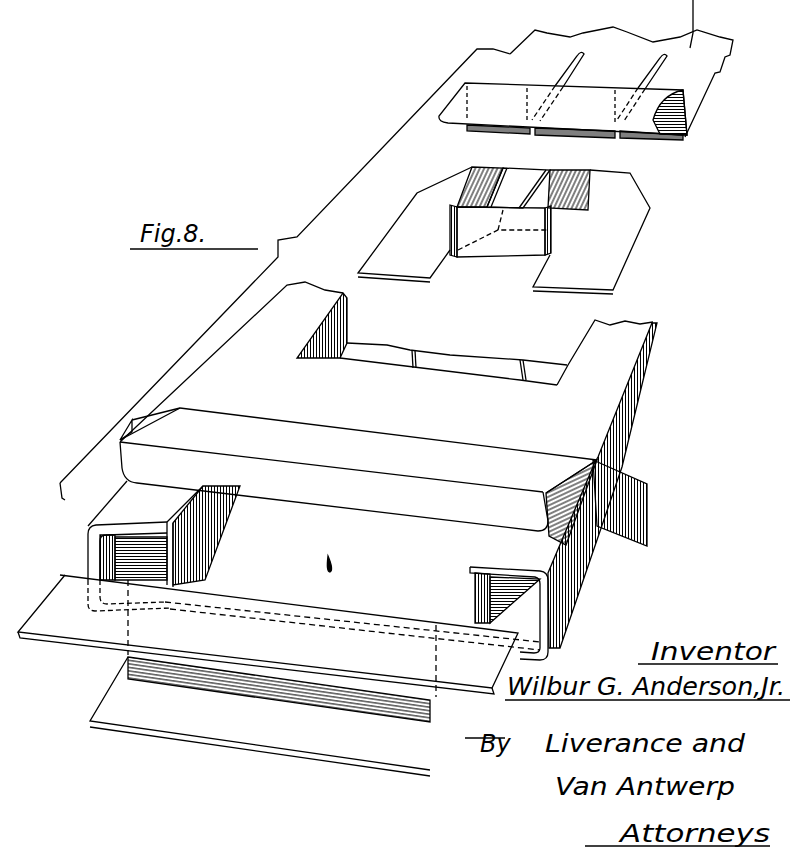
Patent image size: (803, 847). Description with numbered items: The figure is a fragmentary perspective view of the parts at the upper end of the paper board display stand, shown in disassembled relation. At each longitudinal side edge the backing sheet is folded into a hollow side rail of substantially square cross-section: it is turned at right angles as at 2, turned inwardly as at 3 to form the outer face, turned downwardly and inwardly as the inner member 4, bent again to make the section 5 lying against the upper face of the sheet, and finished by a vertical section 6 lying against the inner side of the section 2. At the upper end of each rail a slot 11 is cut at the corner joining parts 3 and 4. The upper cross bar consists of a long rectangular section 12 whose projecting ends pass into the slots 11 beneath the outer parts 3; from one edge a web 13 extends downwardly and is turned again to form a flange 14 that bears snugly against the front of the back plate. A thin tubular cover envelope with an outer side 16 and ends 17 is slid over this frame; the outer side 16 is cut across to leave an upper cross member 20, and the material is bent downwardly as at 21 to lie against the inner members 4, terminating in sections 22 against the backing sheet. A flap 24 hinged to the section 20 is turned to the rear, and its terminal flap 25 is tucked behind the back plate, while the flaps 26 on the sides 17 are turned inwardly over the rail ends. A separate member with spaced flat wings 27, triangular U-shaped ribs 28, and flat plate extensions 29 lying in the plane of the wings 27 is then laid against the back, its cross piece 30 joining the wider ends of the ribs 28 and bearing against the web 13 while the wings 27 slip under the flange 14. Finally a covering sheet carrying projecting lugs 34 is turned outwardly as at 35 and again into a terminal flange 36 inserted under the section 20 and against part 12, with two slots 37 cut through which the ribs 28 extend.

The right-angle turned section 2 is at (88, 565).
The outer face of side rail 3 is at (125, 503).
The inner member of side rail 4 is at (205, 522).
The section lying against upper face of sheet 5 is at (150, 568).
The vertical terminal section 6 is at (110, 540).
The slots 11 is at (190, 512).
The rectangular section of cross bar 12 is at (88, 632).
The web 13 is at (128, 655).
The flange 14 is at (250, 730).
The outer side of cover envelope 16 is at (627, 347).
The ends of cover envelope 17 is at (635, 408).
The upper cross member 20 is at (378, 377).
The downwardly bent section 21 is at (345, 322).
The right angle bent section 22 is at (535, 362).
The flap 24 is at (440, 455).
The terminal flap 25 is at (385, 503).
The side flaps 26 is at (132, 420).
The flat wings 27 is at (405, 230).
The U-shaped ribs 28 is at (470, 200).
The flat plate extensions 29 is at (580, 162).
The cross piece 30 is at (513, 250).
The projecting lugs 34 is at (520, 50).
The outwardly turned section 35 is at (690, 118).
The terminal flange 36 is at (658, 126).
The slots 37 is at (648, 70).